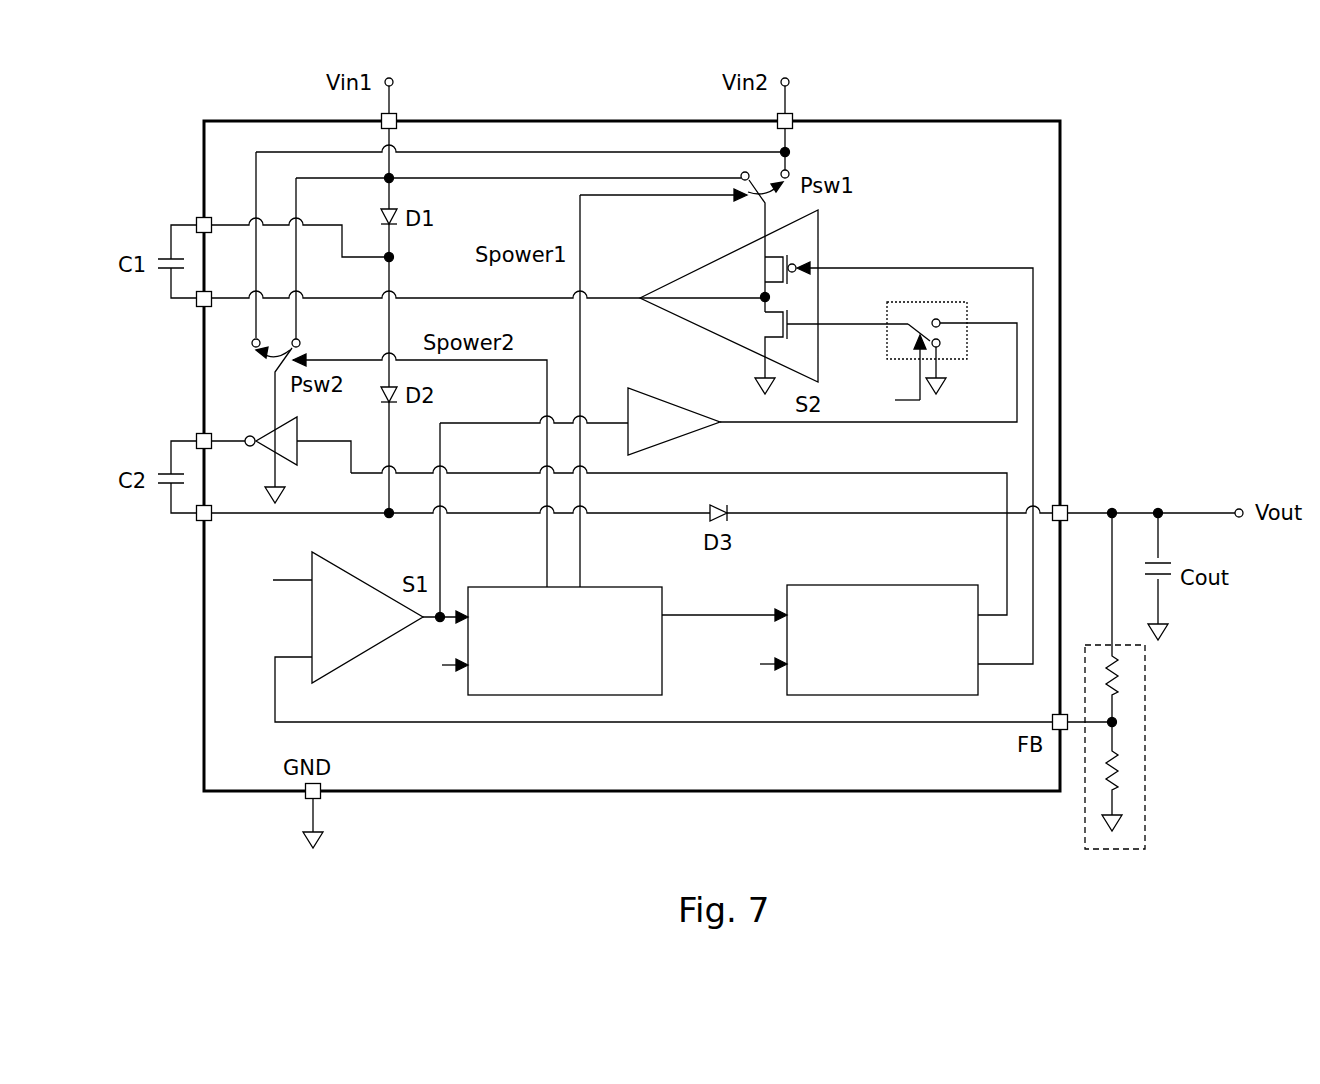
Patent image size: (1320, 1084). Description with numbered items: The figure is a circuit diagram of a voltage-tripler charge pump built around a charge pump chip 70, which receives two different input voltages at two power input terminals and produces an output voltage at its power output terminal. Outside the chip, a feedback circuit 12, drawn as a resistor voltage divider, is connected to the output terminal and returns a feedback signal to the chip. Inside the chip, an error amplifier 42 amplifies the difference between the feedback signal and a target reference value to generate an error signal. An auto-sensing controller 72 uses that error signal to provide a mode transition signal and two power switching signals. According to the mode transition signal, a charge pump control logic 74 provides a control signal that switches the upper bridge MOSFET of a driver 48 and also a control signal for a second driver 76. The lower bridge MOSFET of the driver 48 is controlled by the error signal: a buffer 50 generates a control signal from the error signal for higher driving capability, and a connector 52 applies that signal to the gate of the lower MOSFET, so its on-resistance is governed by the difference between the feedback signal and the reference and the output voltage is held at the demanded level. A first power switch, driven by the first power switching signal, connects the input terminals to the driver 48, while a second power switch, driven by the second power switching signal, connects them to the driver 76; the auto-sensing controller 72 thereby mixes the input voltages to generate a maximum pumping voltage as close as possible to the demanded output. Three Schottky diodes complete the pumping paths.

The charge pump chip 70 is at (1061, 311).
The driver 48 is at (730, 256).
The connector 52 is at (925, 300).
The buffer 50 is at (678, 400).
The driver 76 is at (262, 430).
The error amplifier 42 is at (368, 580).
The auto-sensing controller 72 is at (604, 587).
The charge pump control logic 74 is at (878, 585).
The feedback circuit 12 is at (1145, 724).